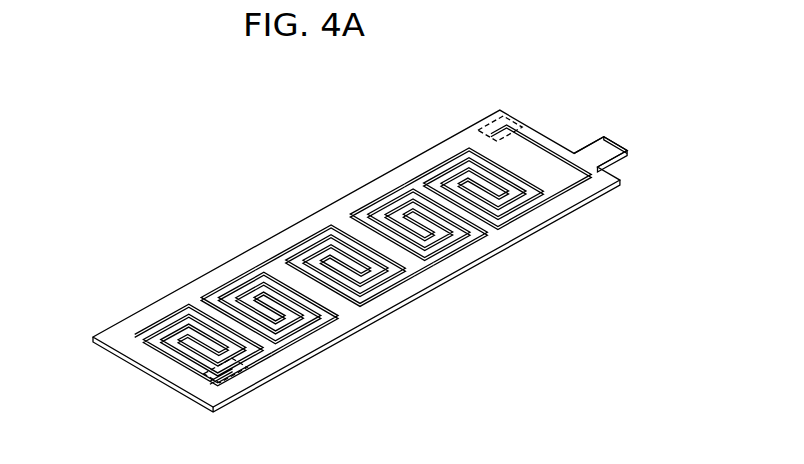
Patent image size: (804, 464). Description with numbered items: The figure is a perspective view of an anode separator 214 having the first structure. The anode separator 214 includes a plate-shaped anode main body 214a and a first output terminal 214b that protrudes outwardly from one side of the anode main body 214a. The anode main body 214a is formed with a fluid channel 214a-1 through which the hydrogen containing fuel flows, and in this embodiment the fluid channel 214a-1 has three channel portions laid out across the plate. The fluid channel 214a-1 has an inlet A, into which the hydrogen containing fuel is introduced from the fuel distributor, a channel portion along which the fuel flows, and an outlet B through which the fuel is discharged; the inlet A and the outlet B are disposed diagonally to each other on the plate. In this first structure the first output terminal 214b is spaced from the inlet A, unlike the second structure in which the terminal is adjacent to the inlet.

The anode separator 214 is at (213, 176).
The anode main body 214a is at (310, 215).
The fluid channel 214a-1 is at (390, 306).
The first output terminal 214b is at (612, 140).
The inlet A is at (482, 132).
The outlet B is at (240, 385).